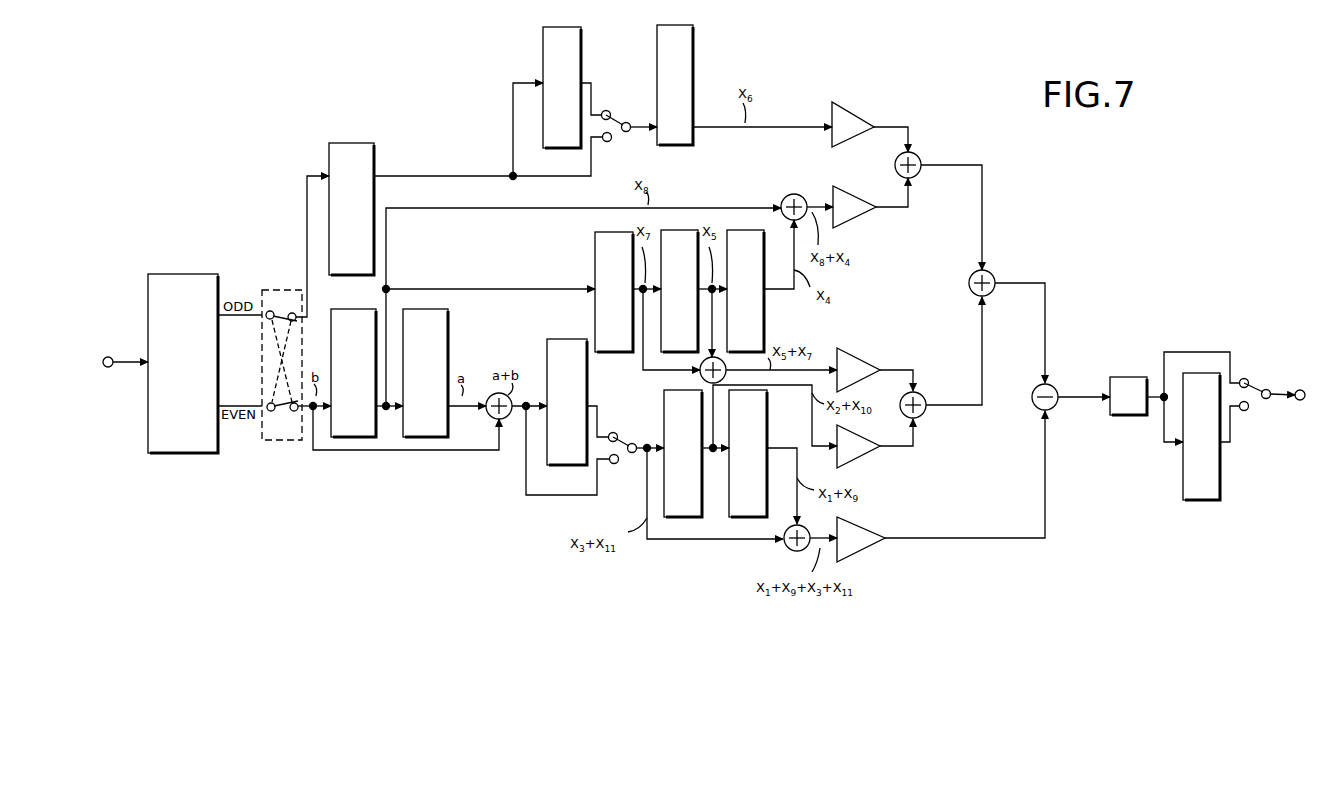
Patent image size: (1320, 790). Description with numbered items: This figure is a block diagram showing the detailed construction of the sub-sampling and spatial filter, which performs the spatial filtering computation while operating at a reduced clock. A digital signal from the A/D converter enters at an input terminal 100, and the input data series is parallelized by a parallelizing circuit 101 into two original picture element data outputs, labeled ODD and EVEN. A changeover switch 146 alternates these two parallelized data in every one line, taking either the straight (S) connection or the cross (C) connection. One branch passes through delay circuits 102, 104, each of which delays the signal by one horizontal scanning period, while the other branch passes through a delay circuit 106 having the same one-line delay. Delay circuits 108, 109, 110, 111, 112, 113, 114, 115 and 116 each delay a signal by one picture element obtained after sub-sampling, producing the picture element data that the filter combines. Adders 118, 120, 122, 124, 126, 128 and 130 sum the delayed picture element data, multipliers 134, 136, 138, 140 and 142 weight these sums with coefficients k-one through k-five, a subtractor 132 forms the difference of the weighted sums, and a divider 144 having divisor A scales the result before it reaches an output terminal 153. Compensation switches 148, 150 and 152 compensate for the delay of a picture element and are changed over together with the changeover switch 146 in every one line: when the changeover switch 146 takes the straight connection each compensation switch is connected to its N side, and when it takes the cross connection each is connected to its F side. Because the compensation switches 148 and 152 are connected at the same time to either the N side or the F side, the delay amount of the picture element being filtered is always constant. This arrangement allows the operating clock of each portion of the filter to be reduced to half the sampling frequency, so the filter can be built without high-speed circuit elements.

The input terminal 100 is at (108, 368).
The parallelizing circuit 101 is at (190, 453).
The changeover switch 146 is at (282, 290).
The delay circuit 102 is at (352, 437).
The delay circuit 104 is at (424, 437).
The delay circuit 106 is at (376, 152).
The delay circuit 108 is at (543, 52).
The delay circuit 109 is at (693, 55).
The delay circuit 110 is at (595, 252).
The delay circuit 111 is at (680, 230).
The delay circuit 112 is at (764, 298).
The delay circuit 113 is at (560, 339).
The delay circuit 114 is at (664, 402).
The delay circuit 115 is at (767, 430).
The delay circuit 116 is at (1202, 500).
The adder 118 is at (786, 197).
The adder 120 is at (700, 378).
The adder 122 is at (510, 416).
The adder 124 is at (787, 548).
The adder 126 is at (918, 155).
The adder 128 is at (924, 413).
The adder 130 is at (970, 278).
The subtractor 132 is at (1034, 407).
The multiplier 134 is at (862, 517).
The multiplier 136 is at (868, 455).
The multiplier 138 is at (858, 348).
The multiplier 140 is at (858, 186).
The multiplier 142 is at (858, 102).
The divider 144 is at (1125, 415).
The compensation switch 148 is at (626, 121).
The compensation switch 150 is at (630, 455).
The compensation switch 152 is at (1264, 399).
The output terminal 153 is at (1300, 389).